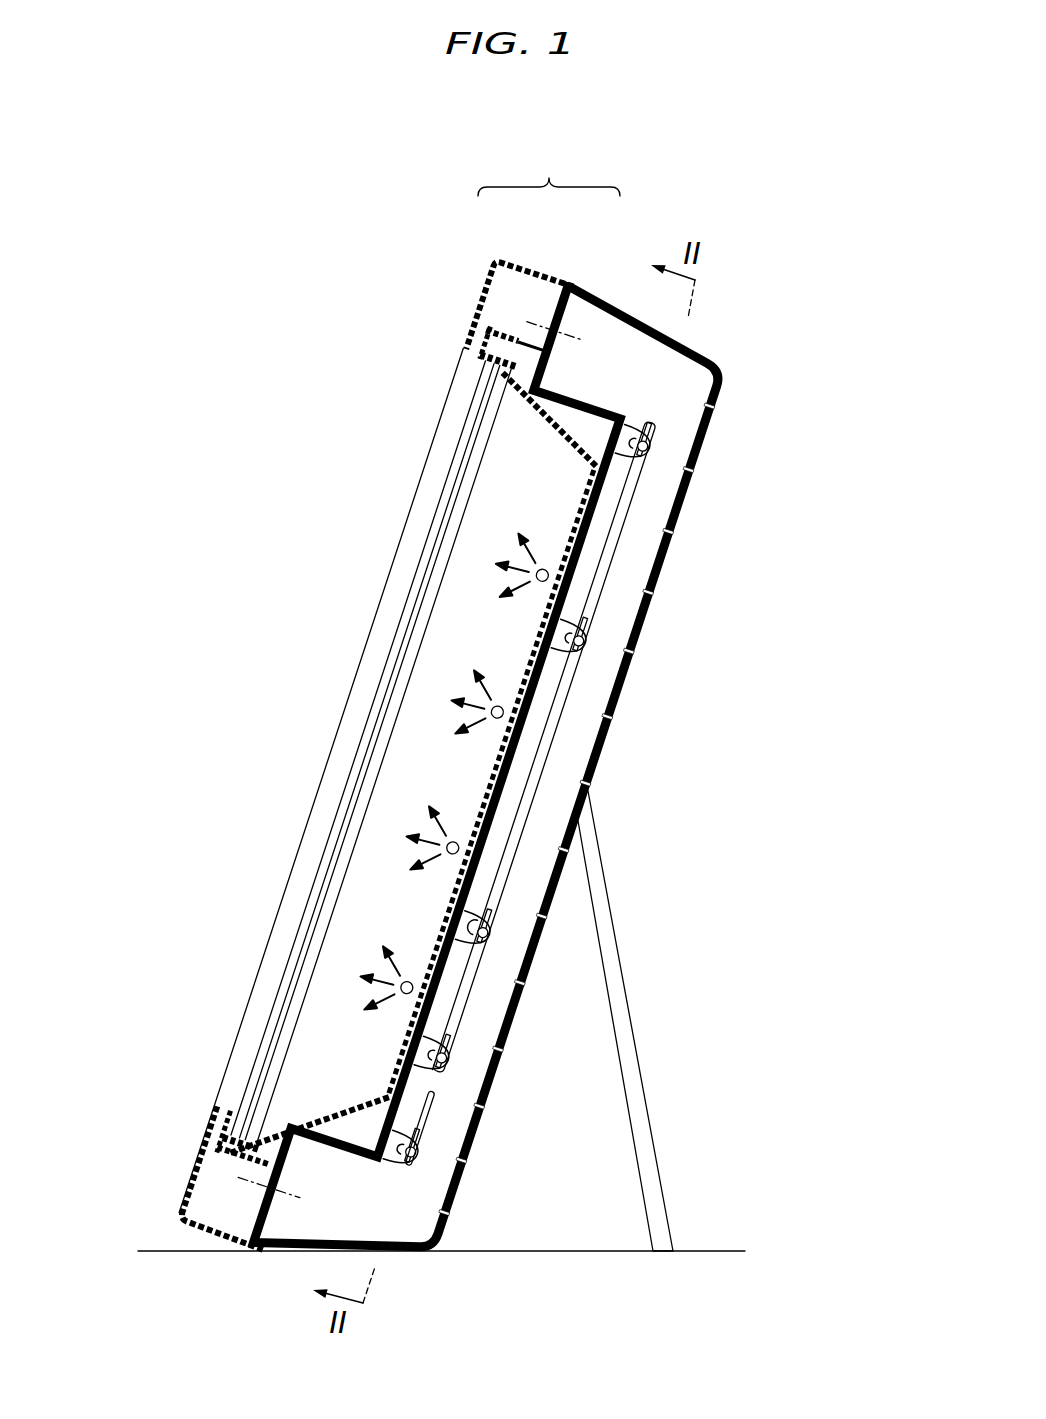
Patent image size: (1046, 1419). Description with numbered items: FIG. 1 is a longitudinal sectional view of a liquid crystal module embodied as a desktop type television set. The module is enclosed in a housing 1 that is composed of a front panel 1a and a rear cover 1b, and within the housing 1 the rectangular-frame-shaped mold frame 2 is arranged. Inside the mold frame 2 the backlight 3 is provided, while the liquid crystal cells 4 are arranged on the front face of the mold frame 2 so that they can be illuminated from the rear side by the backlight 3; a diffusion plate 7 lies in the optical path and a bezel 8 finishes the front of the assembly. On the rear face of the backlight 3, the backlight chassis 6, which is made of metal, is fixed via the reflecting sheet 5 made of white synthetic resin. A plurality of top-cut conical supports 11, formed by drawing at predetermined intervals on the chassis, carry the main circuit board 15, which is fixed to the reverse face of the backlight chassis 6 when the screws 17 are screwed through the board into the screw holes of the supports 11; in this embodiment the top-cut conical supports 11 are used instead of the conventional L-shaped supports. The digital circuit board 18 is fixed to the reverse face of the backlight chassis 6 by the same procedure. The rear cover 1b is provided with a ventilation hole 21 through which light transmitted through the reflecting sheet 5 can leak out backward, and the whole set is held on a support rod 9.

The housing 1 is at (453, 718).
The front panel 1a is at (507, 259).
The rear cover 1b is at (592, 279).
The mold frame 2 is at (553, 433).
The backlight 3 is at (500, 705).
The liquid crystal cells 4 is at (387, 667).
The reflecting sheet 5 is at (496, 782).
The backlight chassis 6 is at (561, 777).
The diffusion plate 7 is at (345, 846).
The bezel 8 is at (505, 330).
The support rod 9 is at (632, 1078).
The top-cut conical supports 11 is at (622, 440).
The main circuit board 15 is at (627, 517).
The screws 17 is at (653, 446).
The digital circuit board 18 is at (430, 1107).
The ventilation hole 21 is at (713, 407).